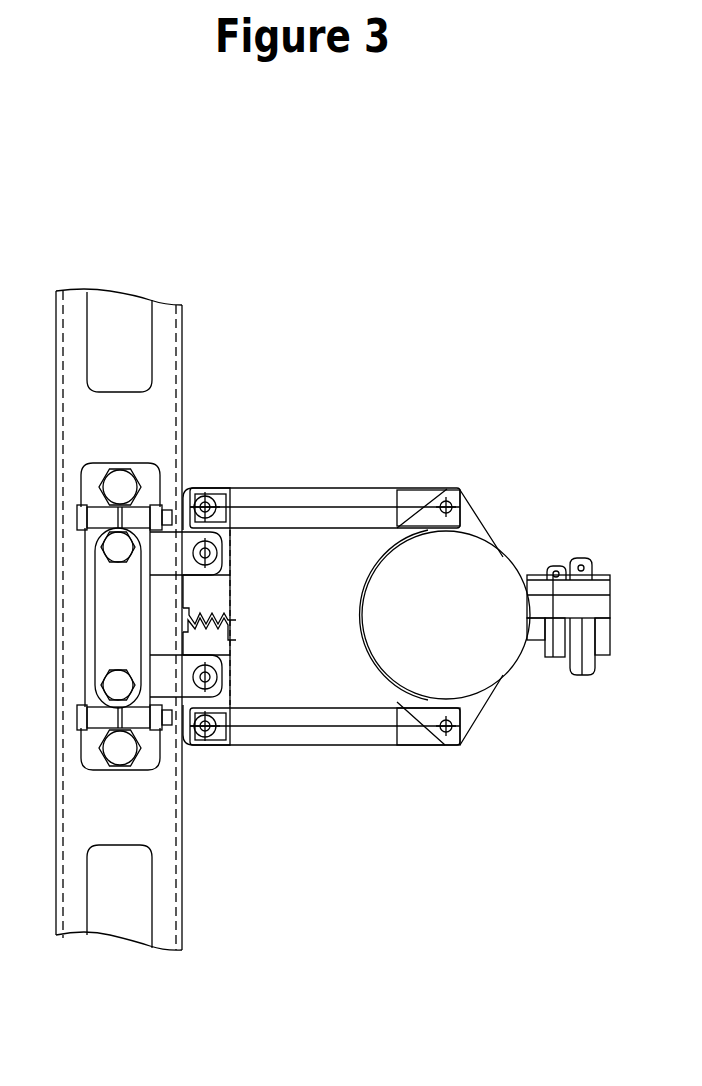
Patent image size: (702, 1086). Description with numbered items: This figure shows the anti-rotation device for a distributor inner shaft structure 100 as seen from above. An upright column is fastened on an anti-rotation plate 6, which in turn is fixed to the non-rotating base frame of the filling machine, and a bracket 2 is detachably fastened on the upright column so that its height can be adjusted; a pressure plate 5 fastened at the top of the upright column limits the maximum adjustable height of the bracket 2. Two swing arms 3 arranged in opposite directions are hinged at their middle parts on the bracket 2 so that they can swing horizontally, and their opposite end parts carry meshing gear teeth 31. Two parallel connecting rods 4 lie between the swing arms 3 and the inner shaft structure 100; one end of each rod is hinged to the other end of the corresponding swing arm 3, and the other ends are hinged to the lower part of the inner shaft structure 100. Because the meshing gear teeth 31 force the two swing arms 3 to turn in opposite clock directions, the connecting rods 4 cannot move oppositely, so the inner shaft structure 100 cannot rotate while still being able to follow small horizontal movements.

The bracket 2 is at (177, 555).
The swing arms 3 is at (247, 623).
The meshing gear teeth 31 is at (218, 597).
The connecting rods 4 is at (310, 495).
The pressure plate 5 is at (105, 597).
The anti-rotation plate 6 is at (160, 817).
The inner shaft structure 100 is at (486, 568).